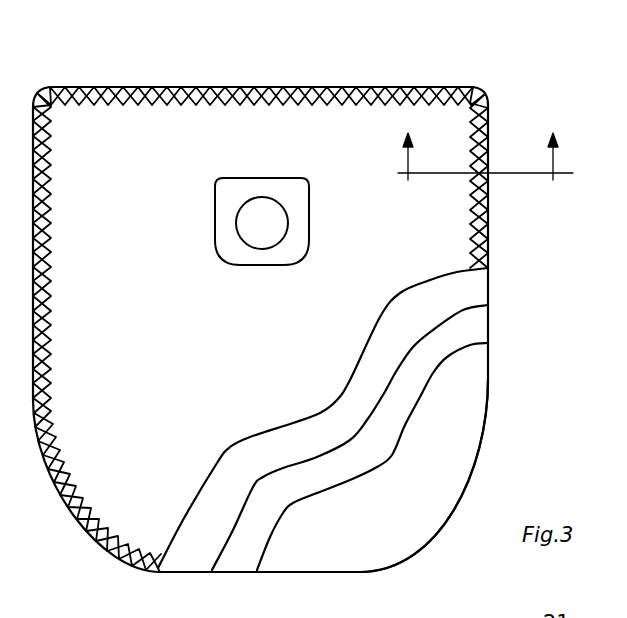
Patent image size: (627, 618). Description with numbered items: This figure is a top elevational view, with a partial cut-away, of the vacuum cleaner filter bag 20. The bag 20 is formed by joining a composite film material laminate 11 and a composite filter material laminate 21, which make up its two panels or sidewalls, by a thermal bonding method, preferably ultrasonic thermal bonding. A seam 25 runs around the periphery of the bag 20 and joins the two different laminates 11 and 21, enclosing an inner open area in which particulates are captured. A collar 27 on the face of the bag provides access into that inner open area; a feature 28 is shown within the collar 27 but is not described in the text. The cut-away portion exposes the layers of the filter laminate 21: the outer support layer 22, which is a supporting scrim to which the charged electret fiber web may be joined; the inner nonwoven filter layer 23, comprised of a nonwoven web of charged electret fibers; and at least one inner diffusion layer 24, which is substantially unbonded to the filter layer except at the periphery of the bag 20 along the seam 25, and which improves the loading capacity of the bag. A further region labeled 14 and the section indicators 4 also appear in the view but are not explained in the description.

The vacuum cleaner filter bag 20 is at (478, 84).
The seam 25 is at (490, 120).
The outer support layer 22 is at (440, 222).
The inner nonwoven filter layer 23 is at (478, 295).
The inner diffusion layer 24 is at (472, 336).
The lower portion 14 is at (470, 415).
The composite film material laminate 11 is at (464, 457).
The collar 27 is at (235, 248).
The opening 28 is at (285, 215).
The composite filter material laminate 21 is at (288, 343).
The section line 4- 4 is at (482, 156).